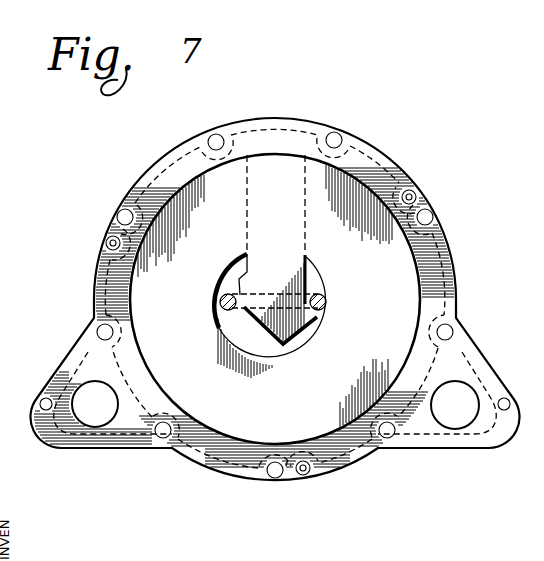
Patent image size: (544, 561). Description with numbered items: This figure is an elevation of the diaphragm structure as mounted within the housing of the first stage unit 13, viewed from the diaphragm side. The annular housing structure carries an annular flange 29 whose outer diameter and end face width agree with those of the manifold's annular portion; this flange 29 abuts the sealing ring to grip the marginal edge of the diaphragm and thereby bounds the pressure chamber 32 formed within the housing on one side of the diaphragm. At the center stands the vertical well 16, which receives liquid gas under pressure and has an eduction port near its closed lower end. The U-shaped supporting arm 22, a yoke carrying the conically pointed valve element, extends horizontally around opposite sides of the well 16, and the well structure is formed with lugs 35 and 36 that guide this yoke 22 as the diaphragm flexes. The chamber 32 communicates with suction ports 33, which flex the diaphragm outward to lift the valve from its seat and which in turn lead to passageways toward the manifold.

The first stage unit 13 is at (407, 164).
The vertical well 16 is at (300, 234).
The U-shaped supporting arm 22 is at (324, 298).
The annular flange 29 is at (352, 444).
The pressure chamber 32 is at (248, 432).
The suction port 33 is at (100, 417).
The lug 35 is at (305, 318).
The lug 36 is at (244, 278).